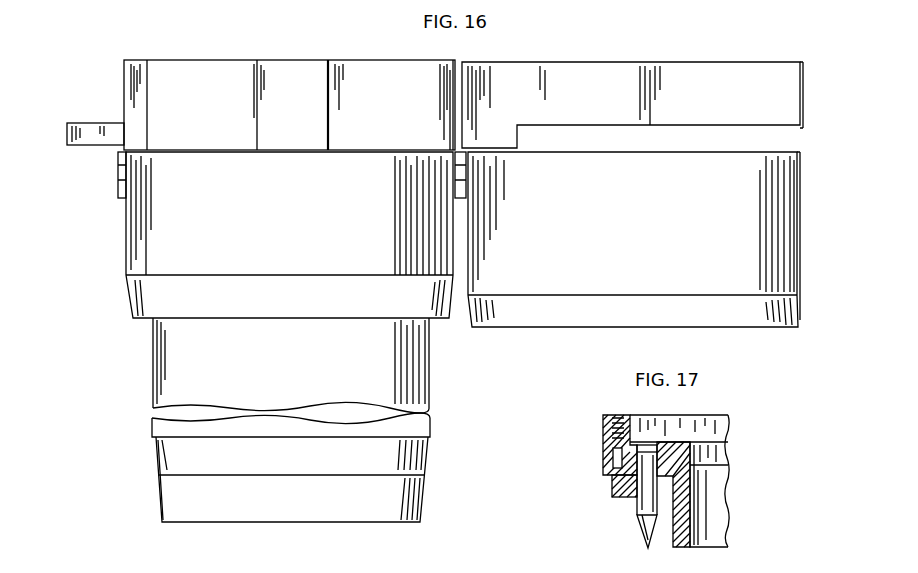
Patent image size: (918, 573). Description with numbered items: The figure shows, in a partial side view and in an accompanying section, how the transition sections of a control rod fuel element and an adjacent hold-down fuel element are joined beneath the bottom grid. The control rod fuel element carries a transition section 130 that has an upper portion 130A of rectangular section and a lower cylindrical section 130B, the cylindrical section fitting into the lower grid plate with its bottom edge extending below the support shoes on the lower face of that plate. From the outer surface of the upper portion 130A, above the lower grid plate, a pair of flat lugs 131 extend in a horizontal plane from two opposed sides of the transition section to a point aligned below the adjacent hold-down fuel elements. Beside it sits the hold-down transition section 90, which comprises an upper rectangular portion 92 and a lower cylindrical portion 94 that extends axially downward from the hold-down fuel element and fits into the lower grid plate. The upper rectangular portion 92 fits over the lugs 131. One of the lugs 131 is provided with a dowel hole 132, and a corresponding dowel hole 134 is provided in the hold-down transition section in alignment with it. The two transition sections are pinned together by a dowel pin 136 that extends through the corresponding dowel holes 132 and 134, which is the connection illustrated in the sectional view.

In FIG. 16, the hold-down transition section 90 is at (770, 59).
In FIG. 16, the upper rectangular portion 92 is at (640, 62).
In FIG. 17, the upper rectangular portion 92 is at (604, 439).
In FIG. 16, the lower cylindrical portion 94 is at (773, 287).
In FIG. 17, the lower cylindrical portion 94 is at (686, 510).
In FIG. 16, the transition section 130 is at (121, 299).
In FIG. 16, the upper portion 130A is at (123, 85).
In FIG. 16, the lower cylindrical section 130B is at (178, 358).
In FIG. 16, the flat lug 131 is at (92, 130).
In FIG. 17, the flat lug 131 is at (611, 490).
In FIG. 17, the dowel hole 132 is at (631, 501).
In FIG. 17, the dowel hole 134 is at (648, 455).
In FIG. 17, the dowel pin 136 is at (644, 525).